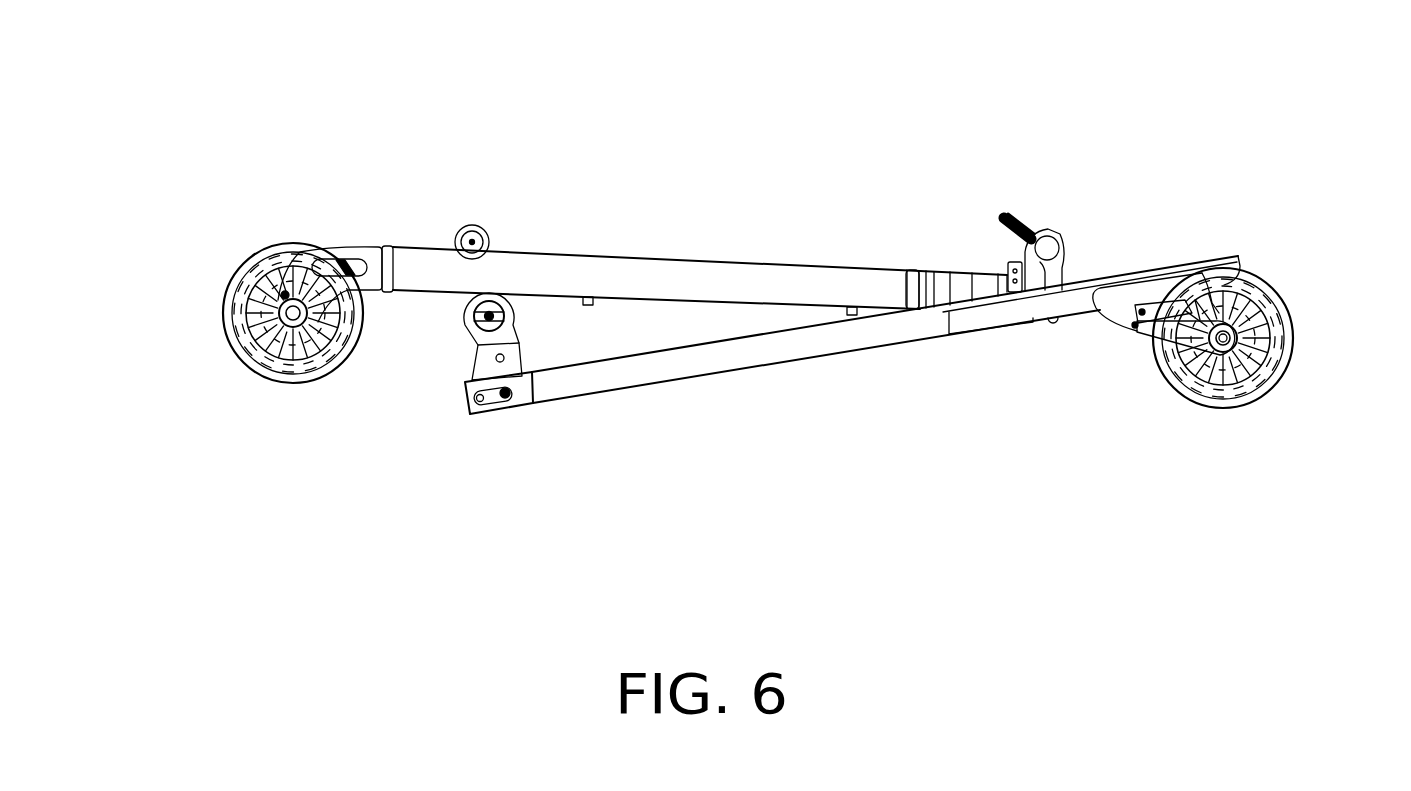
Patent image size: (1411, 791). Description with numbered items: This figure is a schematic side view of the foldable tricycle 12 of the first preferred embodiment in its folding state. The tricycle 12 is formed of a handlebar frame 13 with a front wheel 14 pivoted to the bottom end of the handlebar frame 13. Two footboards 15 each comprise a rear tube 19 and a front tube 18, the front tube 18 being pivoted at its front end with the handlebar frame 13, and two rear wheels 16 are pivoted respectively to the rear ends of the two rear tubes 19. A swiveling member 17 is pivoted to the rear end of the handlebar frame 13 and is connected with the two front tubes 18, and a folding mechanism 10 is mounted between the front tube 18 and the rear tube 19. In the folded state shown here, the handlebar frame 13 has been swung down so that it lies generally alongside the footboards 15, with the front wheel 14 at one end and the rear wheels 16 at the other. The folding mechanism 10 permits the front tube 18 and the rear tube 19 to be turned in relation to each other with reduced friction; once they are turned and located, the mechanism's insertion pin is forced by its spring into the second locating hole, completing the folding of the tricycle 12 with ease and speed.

The folding mechanism 10 is at (497, 405).
The foldable tricycle 12 is at (816, 165).
The handlebar frame 13 is at (682, 268).
The front wheel 14 is at (222, 336).
The footboards 15 is at (807, 347).
The rear wheels 16 is at (1293, 360).
The swiveling member 17 is at (462, 326).
The front tube 18 is at (477, 344).
The rear tube 19 is at (668, 385).